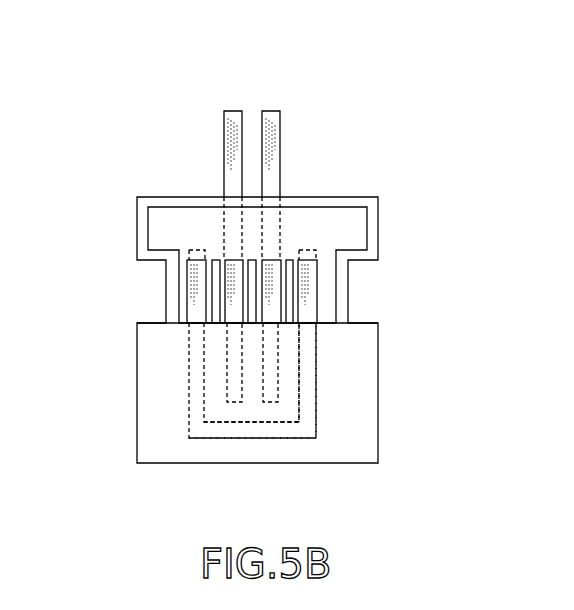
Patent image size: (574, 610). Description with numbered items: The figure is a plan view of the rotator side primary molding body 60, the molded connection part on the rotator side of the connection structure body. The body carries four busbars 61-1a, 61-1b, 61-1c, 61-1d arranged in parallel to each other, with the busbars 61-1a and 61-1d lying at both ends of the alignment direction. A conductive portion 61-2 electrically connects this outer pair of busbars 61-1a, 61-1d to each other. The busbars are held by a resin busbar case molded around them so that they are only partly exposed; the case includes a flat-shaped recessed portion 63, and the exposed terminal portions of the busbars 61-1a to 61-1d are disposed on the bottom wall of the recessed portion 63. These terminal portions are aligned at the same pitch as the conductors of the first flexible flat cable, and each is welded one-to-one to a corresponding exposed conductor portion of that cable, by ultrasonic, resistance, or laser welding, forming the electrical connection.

The rotator side primary molding body 60 is at (249, 274).
The recessed portion 63 is at (178, 222).
The busbar 61-1a is at (391, 344).
The busbar 61-1b is at (374, 213).
The busbar 61-1c is at (131, 213).
The busbar 61-1d is at (164, 344).
The conductive portion 61-2 is at (254, 433).